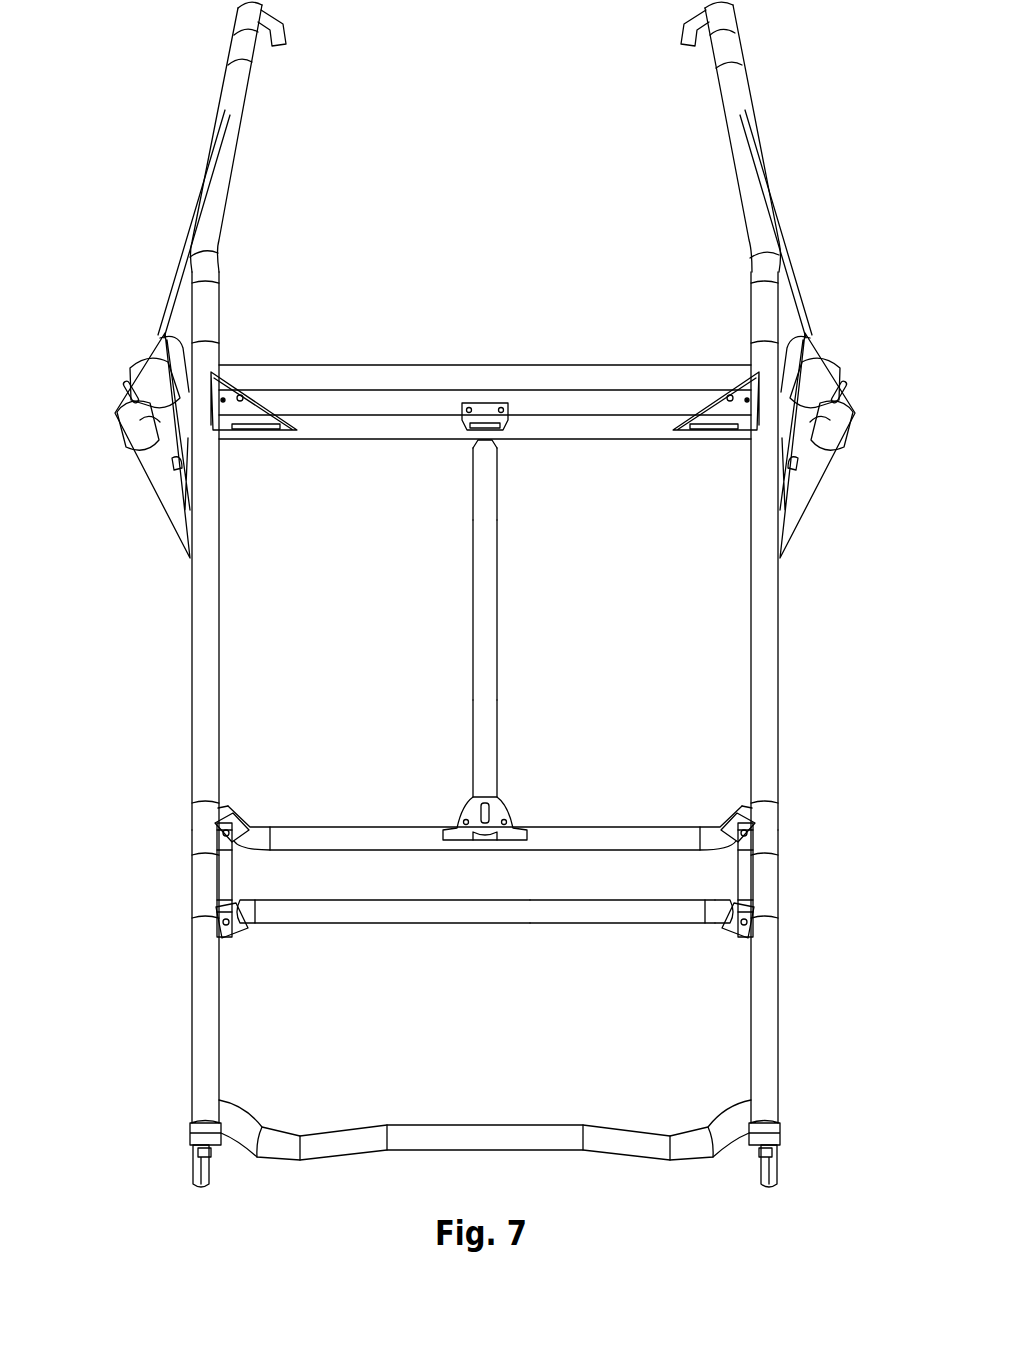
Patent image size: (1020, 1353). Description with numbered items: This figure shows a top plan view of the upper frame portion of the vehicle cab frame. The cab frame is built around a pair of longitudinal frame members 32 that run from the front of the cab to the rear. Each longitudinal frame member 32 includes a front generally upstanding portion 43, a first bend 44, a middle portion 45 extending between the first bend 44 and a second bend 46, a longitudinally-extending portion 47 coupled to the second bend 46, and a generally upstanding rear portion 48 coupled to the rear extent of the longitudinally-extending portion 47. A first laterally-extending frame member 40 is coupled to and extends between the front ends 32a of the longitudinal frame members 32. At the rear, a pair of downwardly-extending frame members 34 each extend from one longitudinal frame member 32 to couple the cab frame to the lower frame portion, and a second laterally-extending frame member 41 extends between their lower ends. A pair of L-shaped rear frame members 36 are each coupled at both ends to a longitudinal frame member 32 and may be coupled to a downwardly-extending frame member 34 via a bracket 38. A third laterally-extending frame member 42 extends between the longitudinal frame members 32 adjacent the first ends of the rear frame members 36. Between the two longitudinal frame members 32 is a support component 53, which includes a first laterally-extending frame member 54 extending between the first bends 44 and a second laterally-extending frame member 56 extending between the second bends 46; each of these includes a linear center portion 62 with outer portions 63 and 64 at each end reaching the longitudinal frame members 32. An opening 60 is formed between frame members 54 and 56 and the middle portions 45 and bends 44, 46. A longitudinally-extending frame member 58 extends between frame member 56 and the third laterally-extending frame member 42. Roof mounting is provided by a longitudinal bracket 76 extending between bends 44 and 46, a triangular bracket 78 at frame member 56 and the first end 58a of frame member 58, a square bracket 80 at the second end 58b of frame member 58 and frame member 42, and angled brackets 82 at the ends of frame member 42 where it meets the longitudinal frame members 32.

The longitudinal frame member 32 is at (504, 613).
The front end of longitudinal frame member 32a is at (171, 1141).
The downwardly-extending frame member 34 is at (114, 414).
The rear frame member 36 is at (169, 317).
The bracket 38 is at (168, 448).
The first laterally-extending frame member 40 is at (611, 1161).
The second laterally-extending frame member 41 is at (485, 401).
The third laterally-extending frame member 42 is at (597, 431).
The front generally upstanding portion 43 is at (210, 1030).
The first bend 44 is at (225, 917).
The middle portion 45 is at (205, 875).
The second bend 46 is at (228, 832).
The longitudinally-extending portion 47 is at (210, 650).
The generally upstanding rear portion 48 is at (234, 118).
The support component 53 is at (526, 939).
The first laterally-extending frame member of support component 54 is at (590, 919).
The second laterally-extending frame member of support component 56 is at (485, 872).
The longitudinally-extending frame member 58 is at (486, 619).
The first end of longitudinally-extending frame member 58a is at (451, 799).
The second end of longitudinally-extending frame member 58b is at (459, 451).
The opening 60 is at (485, 971).
The linear center portion 62 is at (340, 838).
The outer portion 63 is at (246, 830).
The outer portion 64 is at (739, 830).
The longitudinal bracket 76 is at (242, 870).
The triangular bracket 78 is at (496, 826).
The square bracket 80 is at (488, 408).
The angled bracket 82 is at (232, 402).